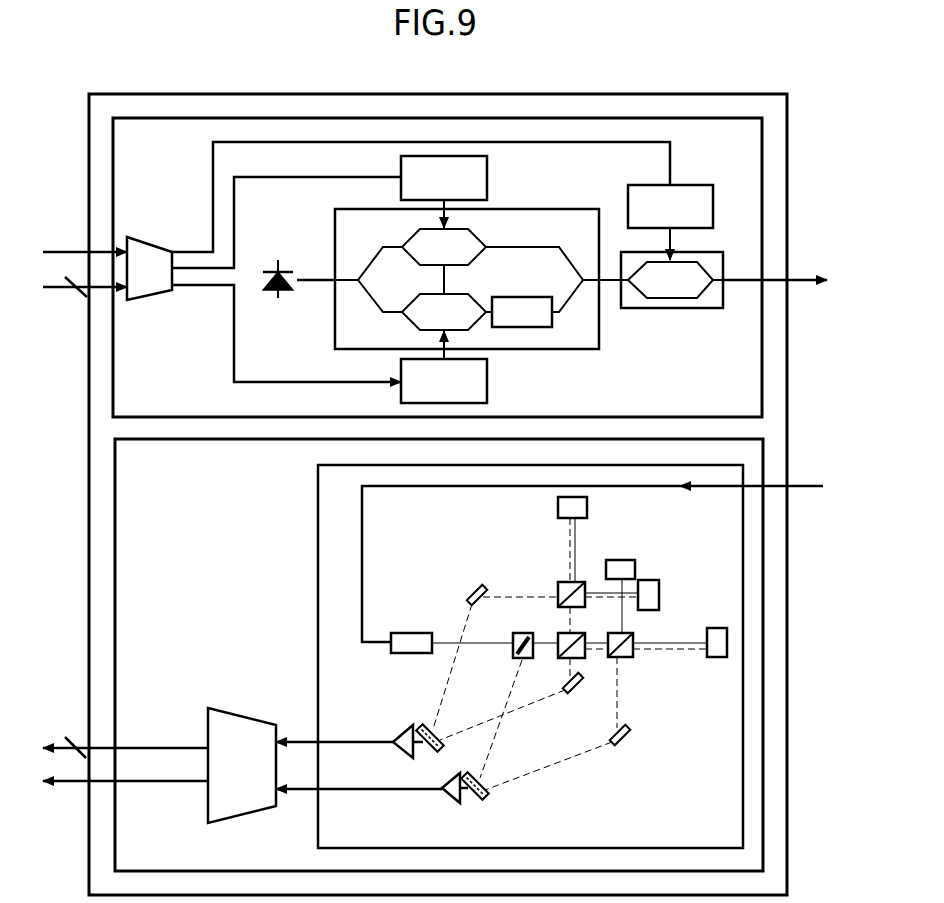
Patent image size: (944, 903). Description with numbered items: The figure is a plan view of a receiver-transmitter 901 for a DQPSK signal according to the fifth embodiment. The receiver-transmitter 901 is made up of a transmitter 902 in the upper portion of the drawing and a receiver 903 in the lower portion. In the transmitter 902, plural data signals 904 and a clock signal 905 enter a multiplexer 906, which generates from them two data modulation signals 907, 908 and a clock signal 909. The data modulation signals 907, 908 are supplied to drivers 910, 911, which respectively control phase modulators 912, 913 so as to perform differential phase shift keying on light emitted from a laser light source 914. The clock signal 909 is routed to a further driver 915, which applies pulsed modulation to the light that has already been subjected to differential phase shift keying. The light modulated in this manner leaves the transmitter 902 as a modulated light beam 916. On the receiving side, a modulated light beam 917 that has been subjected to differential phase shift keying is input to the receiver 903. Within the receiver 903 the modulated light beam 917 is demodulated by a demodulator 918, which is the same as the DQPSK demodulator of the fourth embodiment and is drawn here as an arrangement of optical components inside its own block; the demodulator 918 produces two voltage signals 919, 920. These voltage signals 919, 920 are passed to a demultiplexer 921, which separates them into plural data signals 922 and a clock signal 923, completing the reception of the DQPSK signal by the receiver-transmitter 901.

The receiver-transmitter 901 is at (249, 93).
The transmitter 902 is at (113, 391).
The receiver 903 is at (115, 531).
The data signals 904 is at (62, 292).
The clock signal 905 is at (62, 248).
The multiplexer 906 is at (150, 301).
The data modulation signal 907 is at (234, 367).
The data modulation signal 908 is at (234, 211).
The clock signal 909 is at (213, 160).
The driver 910 is at (488, 384).
The driver 911 is at (488, 180).
The phase modulator 912 is at (482, 300).
The phase modulator 913 is at (480, 236).
The laser light source 914 is at (284, 270).
The driver 915 is at (710, 167).
The modulated light beam 916 is at (817, 257).
The modulated light beam 917 is at (805, 482).
The demodulator 918 is at (744, 566).
The voltage signal 919 is at (362, 738).
The voltage signal 920 is at (360, 792).
The demultiplexer 921 is at (245, 715).
The data signals 922 is at (62, 741).
The clock signal 923 is at (62, 788).